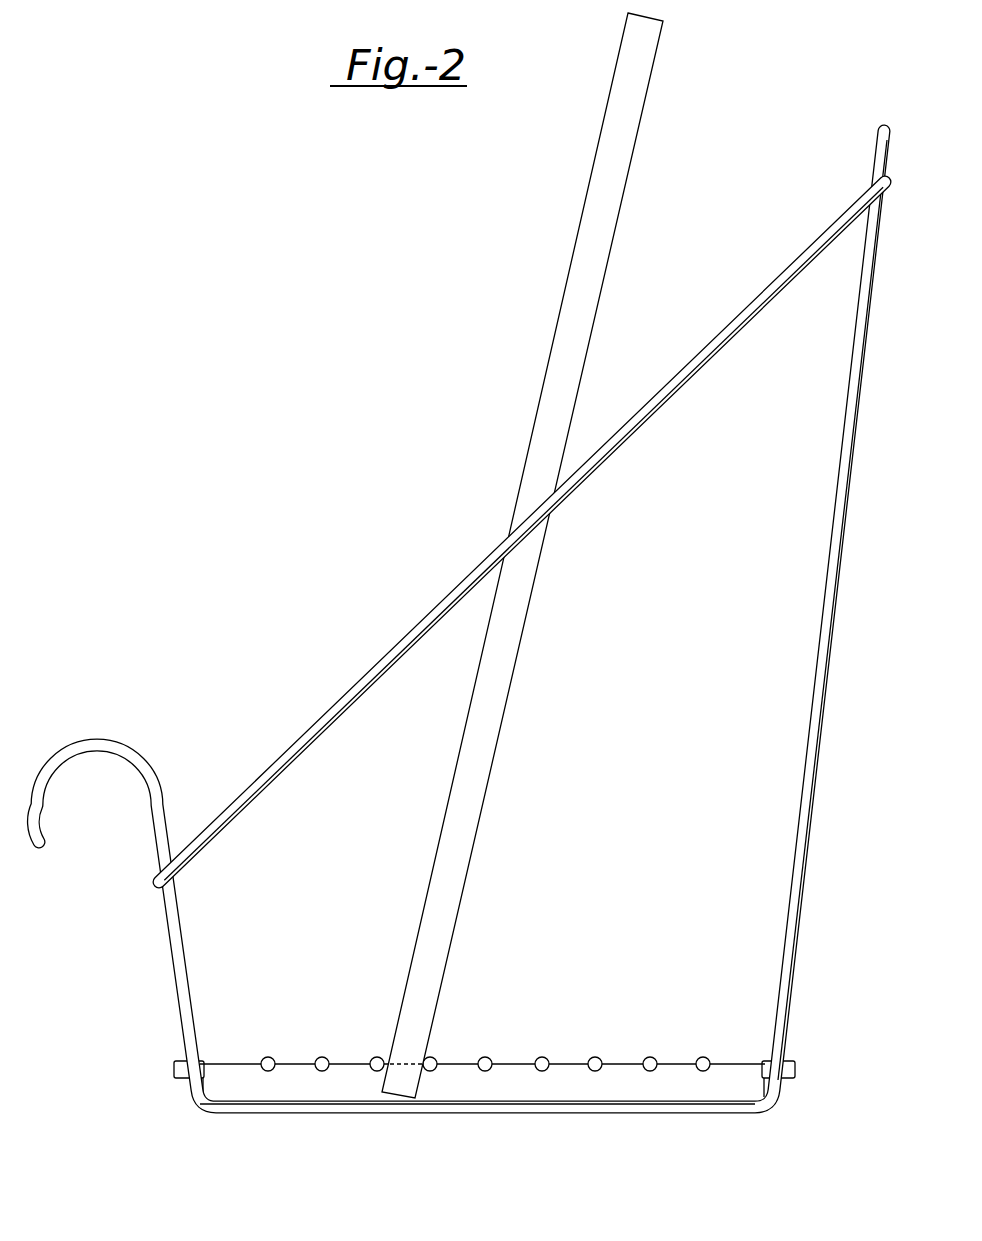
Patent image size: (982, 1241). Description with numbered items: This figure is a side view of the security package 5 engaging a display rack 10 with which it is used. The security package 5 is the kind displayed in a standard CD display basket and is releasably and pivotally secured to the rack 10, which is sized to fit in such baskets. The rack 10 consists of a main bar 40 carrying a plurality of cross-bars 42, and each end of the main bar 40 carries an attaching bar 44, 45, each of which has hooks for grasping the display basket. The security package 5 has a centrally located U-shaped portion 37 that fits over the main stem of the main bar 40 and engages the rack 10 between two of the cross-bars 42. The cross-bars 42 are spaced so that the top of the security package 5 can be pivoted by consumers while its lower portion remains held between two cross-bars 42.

The security package 5 is at (530, 329).
The rack 10 is at (304, 695).
The U-shaped portion 37 is at (395, 1063).
The main bar 40 is at (517, 1073).
The cross-bars 42 is at (543, 1057).
The attaching bar 44 is at (173, 1065).
The attaching bar 45 is at (797, 1070).